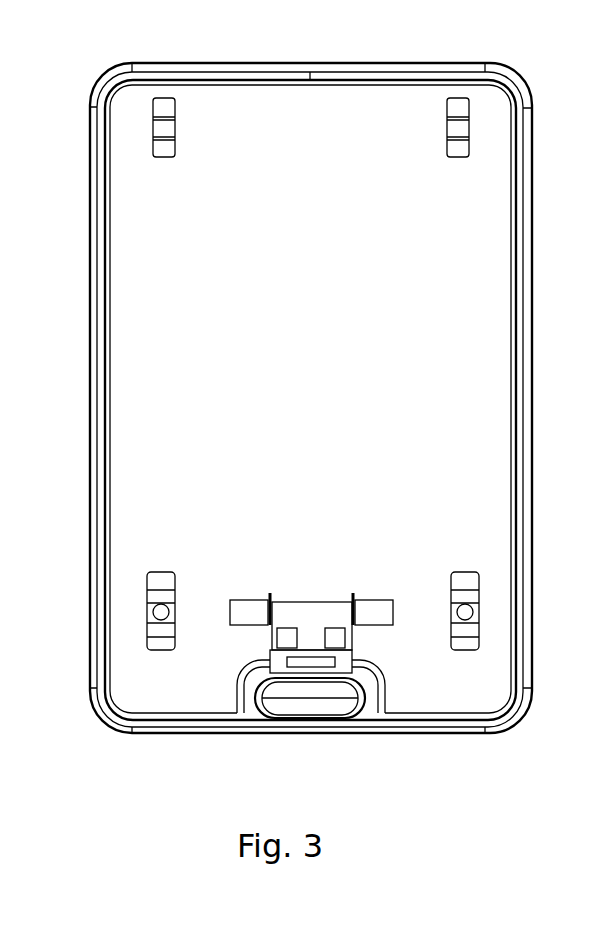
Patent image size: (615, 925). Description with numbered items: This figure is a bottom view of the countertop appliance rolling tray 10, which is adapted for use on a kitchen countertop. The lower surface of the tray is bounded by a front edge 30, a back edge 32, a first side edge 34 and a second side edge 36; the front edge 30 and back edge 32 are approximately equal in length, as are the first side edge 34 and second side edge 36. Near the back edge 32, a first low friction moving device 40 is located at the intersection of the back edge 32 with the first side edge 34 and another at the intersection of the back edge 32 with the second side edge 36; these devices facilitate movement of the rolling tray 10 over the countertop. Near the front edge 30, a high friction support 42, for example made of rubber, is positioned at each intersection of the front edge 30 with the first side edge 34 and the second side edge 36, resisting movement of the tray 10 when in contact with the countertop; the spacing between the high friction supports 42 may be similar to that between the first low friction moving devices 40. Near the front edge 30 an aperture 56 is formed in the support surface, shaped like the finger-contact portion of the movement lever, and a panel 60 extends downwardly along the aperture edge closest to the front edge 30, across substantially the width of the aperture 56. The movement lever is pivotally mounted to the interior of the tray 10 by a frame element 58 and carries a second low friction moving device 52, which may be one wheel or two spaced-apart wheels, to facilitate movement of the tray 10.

The countertop appliance rolling tray 10 is at (115, 797).
The back edge 32 is at (282, 80).
The first side edge 34 is at (92, 302).
The second side edge 36 is at (520, 412).
The first low friction moving device 40 is at (160, 118).
The high friction support 42 is at (462, 610).
The frame element 58 is at (355, 605).
The second low friction moving device 52 is at (335, 637).
The front edge 30 is at (258, 720).
The panel 60 is at (293, 718).
The aperture 56 is at (335, 697).